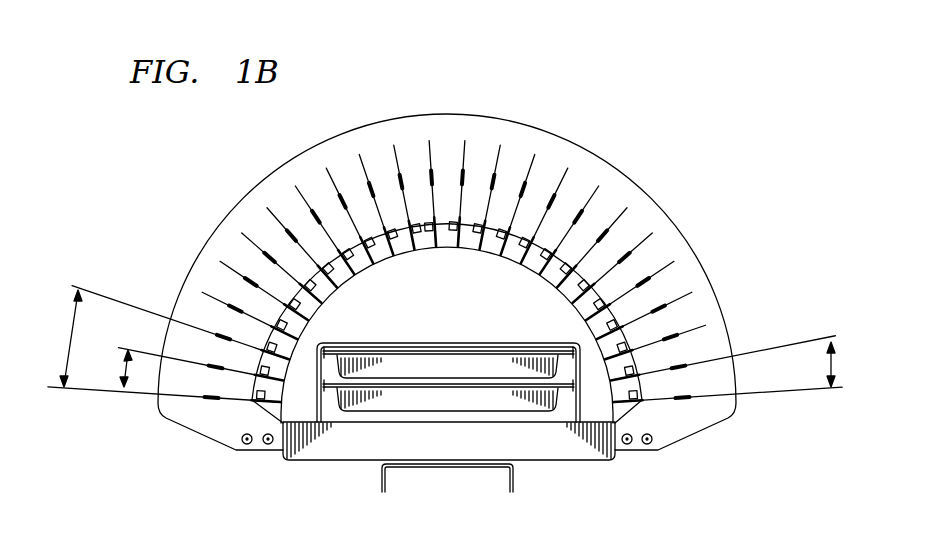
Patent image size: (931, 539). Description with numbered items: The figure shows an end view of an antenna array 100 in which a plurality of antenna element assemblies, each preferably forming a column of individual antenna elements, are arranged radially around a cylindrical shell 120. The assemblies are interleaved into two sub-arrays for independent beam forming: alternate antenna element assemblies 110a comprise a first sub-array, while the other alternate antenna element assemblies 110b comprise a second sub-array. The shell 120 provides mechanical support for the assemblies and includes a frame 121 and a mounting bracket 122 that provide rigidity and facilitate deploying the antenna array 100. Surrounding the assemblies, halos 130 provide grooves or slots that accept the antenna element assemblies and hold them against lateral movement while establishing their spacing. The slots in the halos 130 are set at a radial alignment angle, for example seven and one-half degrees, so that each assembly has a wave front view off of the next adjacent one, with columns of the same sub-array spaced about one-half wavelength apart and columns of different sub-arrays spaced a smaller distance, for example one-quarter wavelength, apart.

The antenna array 100 is at (590, 79).
The antenna element assemblies of first sub-array 110a is at (658, 400).
The antenna element assemblies of second sub-array 110b is at (703, 363).
The shell 120 is at (424, 247).
The frame 121 is at (545, 456).
The mounting bracket 122 is at (380, 479).
The halos 130 is at (738, 378).